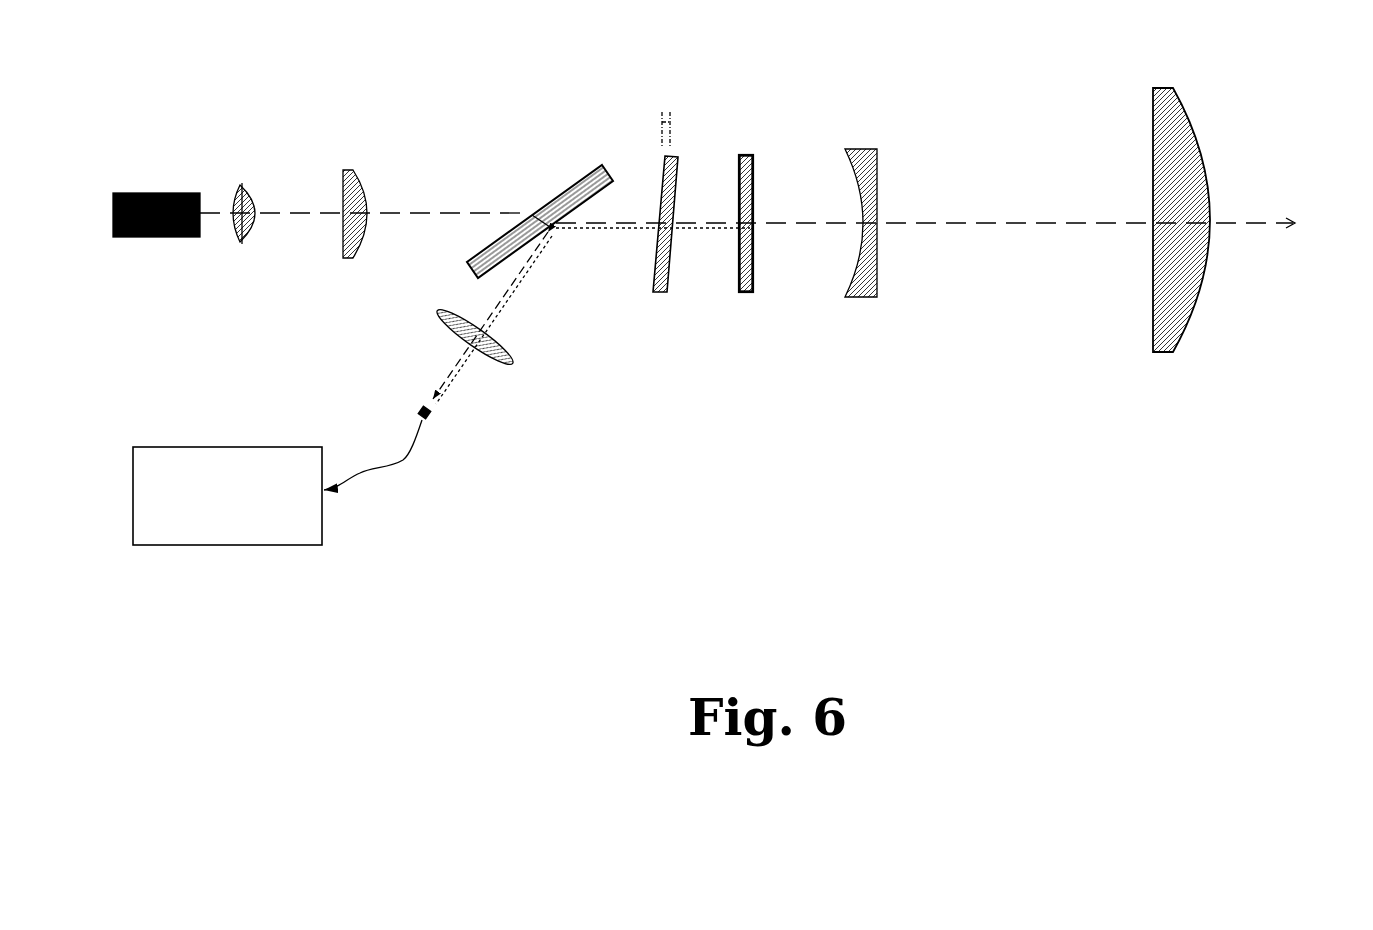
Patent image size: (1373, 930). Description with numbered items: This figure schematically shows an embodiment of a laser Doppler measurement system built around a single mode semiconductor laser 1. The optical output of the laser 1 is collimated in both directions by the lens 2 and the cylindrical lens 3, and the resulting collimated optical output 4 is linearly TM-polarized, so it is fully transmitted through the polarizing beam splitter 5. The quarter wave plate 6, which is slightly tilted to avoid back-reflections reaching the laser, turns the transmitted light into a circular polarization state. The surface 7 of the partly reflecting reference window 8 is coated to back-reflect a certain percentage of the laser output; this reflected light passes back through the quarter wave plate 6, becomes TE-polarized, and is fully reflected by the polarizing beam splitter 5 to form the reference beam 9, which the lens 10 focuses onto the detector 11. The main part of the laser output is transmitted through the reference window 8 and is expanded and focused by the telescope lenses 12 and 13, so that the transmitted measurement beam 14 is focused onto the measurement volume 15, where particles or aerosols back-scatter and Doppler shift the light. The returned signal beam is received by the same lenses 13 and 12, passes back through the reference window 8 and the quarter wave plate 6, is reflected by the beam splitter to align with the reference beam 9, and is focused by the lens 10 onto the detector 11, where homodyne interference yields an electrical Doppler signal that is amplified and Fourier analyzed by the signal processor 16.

The single mode semiconductor laser 1 is at (165, 190).
The lens 2 is at (240, 172).
The cylindrical lens 3 is at (357, 162).
The collimated optical output 4 is at (405, 227).
The polarizing beam splitter 5 is at (555, 178).
The quarter wave plate 6 is at (654, 152).
The surface 7 is at (732, 165).
The partly reflecting reference window 8 is at (753, 147).
The reference beam 9 is at (520, 287).
The lens 10 is at (520, 373).
The detector 11 is at (430, 425).
The telescope lens 12 is at (870, 133).
The telescope lens 13 is at (1148, 147).
The transmitted measurement beam 14 is at (1257, 203).
The measurement volume 15 is at (1360, 260).
The signal processor 16 is at (330, 528).